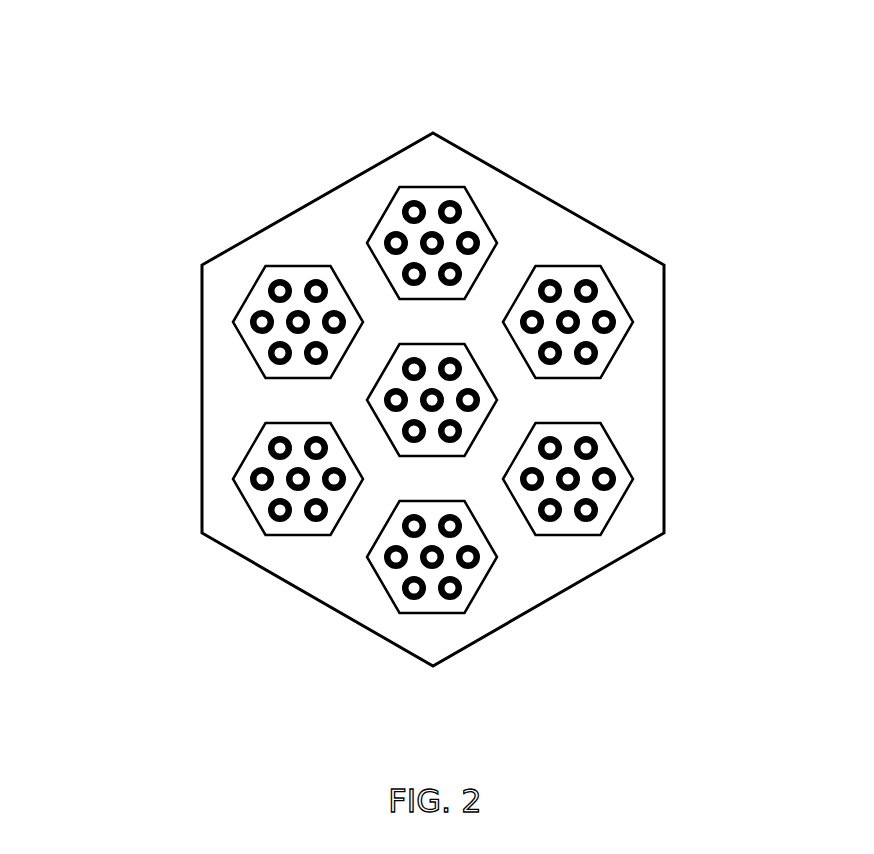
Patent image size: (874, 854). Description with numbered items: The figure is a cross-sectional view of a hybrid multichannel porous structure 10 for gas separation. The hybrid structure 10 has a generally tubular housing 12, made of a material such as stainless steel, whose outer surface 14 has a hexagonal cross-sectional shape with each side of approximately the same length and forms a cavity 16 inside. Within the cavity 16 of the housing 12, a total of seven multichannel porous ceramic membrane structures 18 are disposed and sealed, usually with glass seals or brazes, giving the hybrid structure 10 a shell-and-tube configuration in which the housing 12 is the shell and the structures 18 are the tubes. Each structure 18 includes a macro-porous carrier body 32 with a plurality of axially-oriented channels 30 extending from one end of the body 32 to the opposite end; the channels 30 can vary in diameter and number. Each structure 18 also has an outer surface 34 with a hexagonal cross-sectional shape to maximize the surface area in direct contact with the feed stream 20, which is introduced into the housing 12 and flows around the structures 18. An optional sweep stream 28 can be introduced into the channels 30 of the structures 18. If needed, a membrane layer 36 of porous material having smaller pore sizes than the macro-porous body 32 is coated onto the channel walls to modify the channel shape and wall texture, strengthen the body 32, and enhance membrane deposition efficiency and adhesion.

The hybrid multichannel porous structure 10 is at (470, 366).
The housing 12 is at (466, 399).
The outer surface 14 is at (433, 399).
The cavity 16 is at (547, 232).
The multichannel porous ceramic membrane structure 18 is at (436, 394).
The feed stream 20 is at (600, 252).
The sweep stream 28 is at (419, 252).
The channel 30 is at (448, 341).
The macro-porous body 32 is at (448, 341).
The outer surface 34 is at (443, 393).
The membrane layer 36 is at (452, 207).